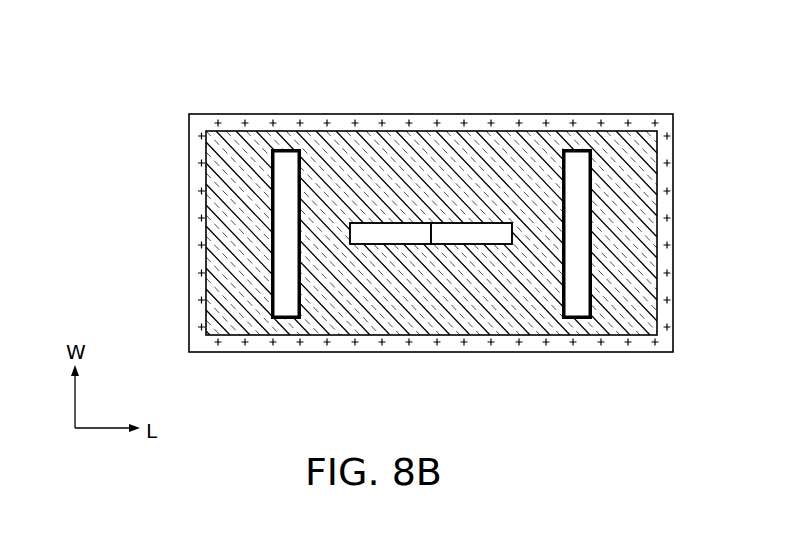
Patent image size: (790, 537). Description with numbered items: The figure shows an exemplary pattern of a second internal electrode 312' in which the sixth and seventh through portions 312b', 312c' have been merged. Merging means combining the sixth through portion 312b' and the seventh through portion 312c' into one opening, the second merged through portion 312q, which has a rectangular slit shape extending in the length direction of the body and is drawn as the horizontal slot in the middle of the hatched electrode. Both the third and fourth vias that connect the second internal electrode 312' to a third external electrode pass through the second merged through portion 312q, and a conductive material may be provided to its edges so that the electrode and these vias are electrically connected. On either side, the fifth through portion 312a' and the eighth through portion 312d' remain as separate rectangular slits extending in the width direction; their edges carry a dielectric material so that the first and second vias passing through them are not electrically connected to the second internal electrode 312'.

The second internal electrode 312' is at (393, 233).
The fifth through portion 312a' is at (288, 190).
The sixth through portion 312b' is at (391, 133).
The seventh through portion 312c' is at (471, 133).
The eighth through portion 312d' is at (579, 190).
The second merged through portion 312q is at (432, 222).